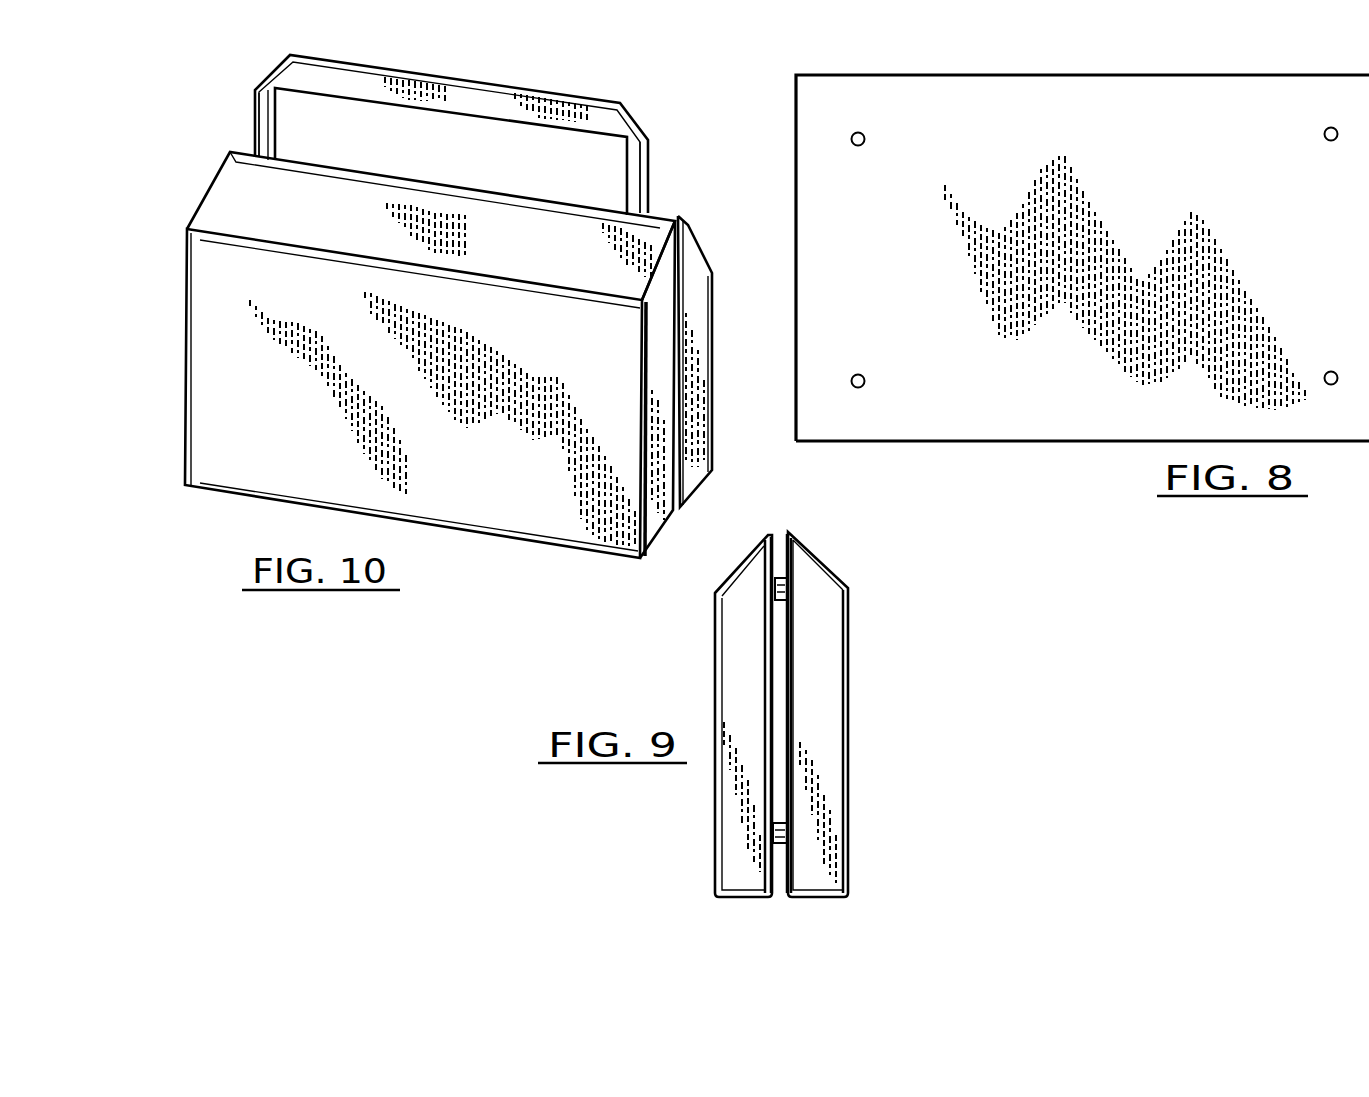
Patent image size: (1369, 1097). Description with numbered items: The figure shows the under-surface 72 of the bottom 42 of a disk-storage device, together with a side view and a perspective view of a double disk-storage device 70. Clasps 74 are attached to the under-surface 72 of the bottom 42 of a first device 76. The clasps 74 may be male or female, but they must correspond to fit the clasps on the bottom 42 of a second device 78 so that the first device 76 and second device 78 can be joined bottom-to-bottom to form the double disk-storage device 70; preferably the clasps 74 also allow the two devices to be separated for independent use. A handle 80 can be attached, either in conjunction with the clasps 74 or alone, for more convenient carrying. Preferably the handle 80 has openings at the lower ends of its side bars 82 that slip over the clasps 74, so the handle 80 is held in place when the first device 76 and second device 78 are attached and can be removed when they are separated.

In FIG. 8, the bottom 42 is at (1082, 294).
In FIG. 10, the double disk-storage device 70 is at (446, 302).
In FIG. 9, the double disk-storage device 70 is at (851, 689).
In FIG. 8, the under-surface 72 is at (1163, 224).
In FIG. 9, the clasps 74 is at (776, 572).
In FIG. 8, the clasps 74 is at (865, 139).
In FIG. 9, the first device 76 is at (757, 707).
In FIG. 9, the second device 78 is at (833, 693).
In FIG. 10, the handle 80 is at (496, 130).
In FIG. 10, the side bars 82 is at (262, 138).